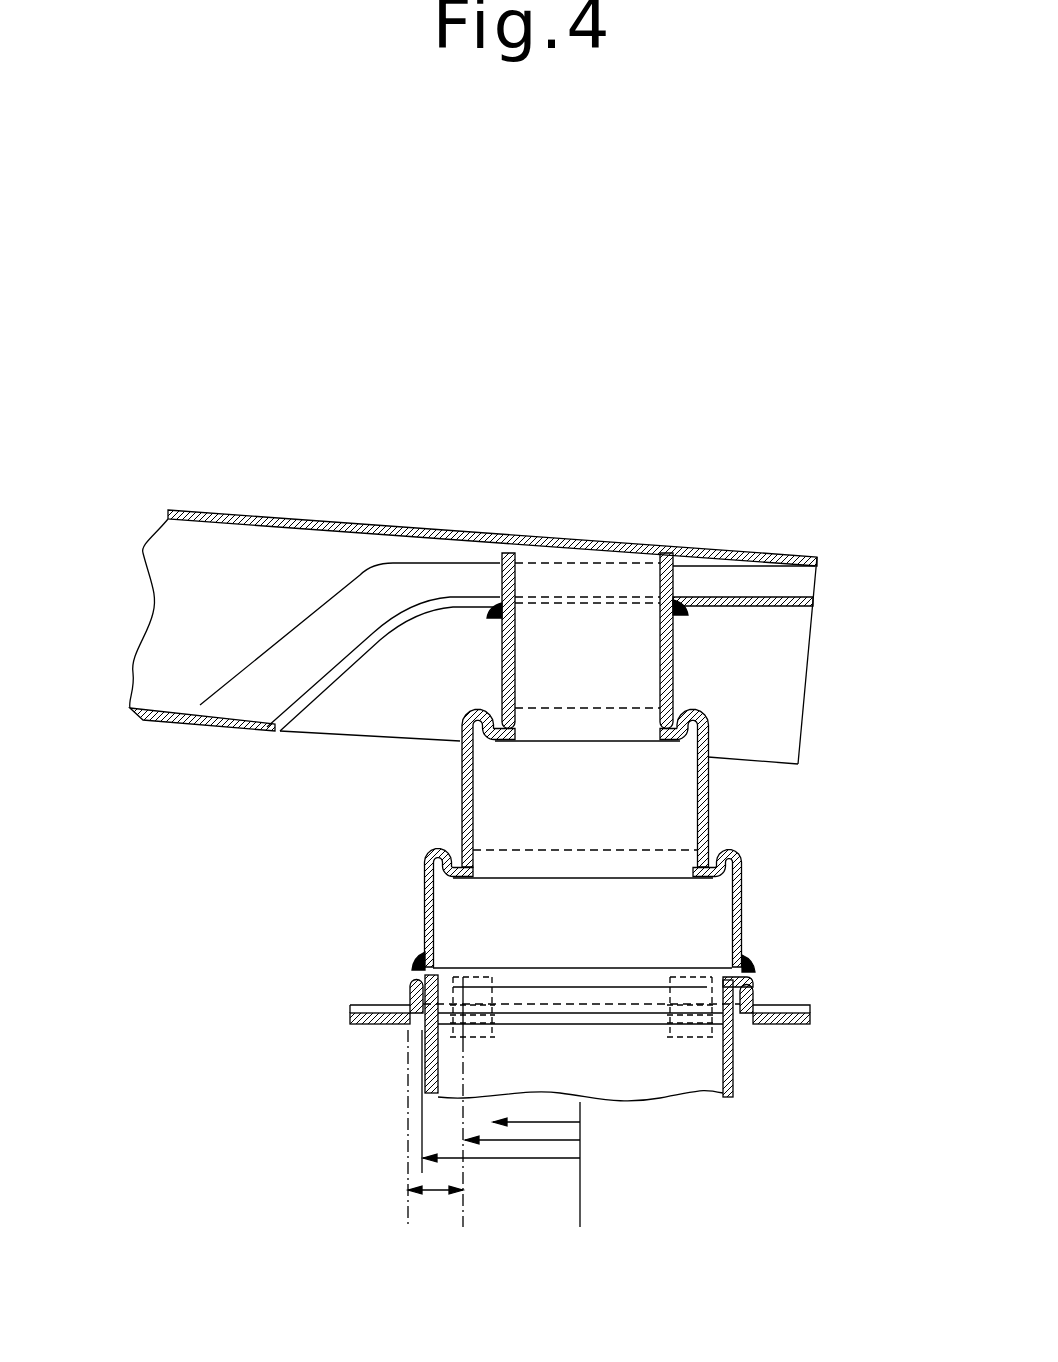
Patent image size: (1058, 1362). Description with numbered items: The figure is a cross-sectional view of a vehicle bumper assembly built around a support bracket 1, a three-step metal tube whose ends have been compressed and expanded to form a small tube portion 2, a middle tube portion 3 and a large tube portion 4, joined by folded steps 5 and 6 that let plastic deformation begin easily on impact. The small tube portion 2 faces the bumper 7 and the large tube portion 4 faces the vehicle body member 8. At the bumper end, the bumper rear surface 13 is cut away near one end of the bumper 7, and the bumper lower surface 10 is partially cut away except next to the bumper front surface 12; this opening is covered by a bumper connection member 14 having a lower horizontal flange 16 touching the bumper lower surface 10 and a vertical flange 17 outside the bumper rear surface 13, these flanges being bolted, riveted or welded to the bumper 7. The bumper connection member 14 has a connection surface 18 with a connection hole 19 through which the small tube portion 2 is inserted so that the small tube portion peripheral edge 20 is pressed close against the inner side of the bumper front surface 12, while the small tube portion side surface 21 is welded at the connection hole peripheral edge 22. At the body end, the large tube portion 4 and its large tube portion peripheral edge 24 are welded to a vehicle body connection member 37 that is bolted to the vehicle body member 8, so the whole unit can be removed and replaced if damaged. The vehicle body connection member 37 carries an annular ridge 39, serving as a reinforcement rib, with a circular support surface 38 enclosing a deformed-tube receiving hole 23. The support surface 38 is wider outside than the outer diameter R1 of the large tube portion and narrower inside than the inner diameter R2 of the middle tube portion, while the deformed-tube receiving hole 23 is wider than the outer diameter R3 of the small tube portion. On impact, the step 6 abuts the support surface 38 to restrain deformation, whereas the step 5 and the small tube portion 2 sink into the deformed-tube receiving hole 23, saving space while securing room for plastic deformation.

The support bracket 1 is at (717, 813).
The small tube portion 2 is at (607, 670).
The middle tube portion 3 is at (545, 800).
The large tube portion 4 is at (653, 928).
The step 5 is at (710, 735).
The step 6 is at (440, 848).
The bumper 7 is at (290, 507).
The vehicle body member 8 is at (759, 1030).
The bumper lower surface 10 is at (195, 567).
The bumper front surface 12 is at (374, 524).
The bumper rear surface 13 is at (170, 706).
The bumper connection member 14 is at (704, 575).
The lower horizontal flange 16 is at (783, 585).
The vertical flange 17 is at (205, 728).
The connection surface 18 is at (480, 598).
The connection hole 19 is at (588, 598).
The small tube portion peripheral edge 20 is at (551, 553).
The small tube portion side surface 21 is at (673, 645).
The connection hole peripheral edge 22 is at (684, 611).
The deformed-tube receiving hole 23 is at (657, 980).
The large tube portion peripheral edge 24 is at (428, 960).
The vehicle body connection member 37 is at (692, 1015).
The support surface 38 is at (423, 1007).
The annular ridge 39 is at (412, 987).
The outer diameter of the large tube portion R1 is at (523, 1158).
The inner diameter of the middle tube portion R2 is at (560, 1140).
The outer diameter of the small tube portion R3 is at (581, 1123).